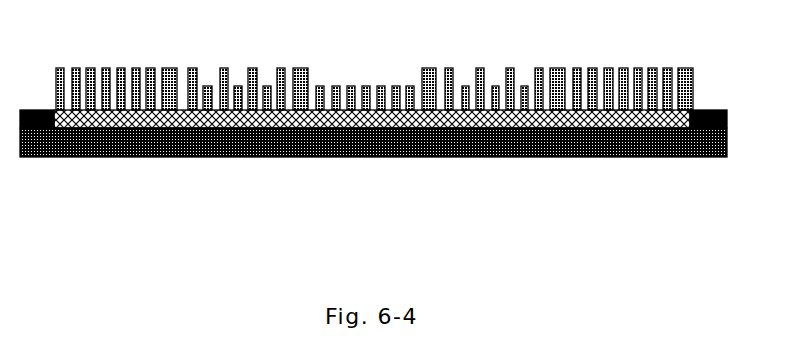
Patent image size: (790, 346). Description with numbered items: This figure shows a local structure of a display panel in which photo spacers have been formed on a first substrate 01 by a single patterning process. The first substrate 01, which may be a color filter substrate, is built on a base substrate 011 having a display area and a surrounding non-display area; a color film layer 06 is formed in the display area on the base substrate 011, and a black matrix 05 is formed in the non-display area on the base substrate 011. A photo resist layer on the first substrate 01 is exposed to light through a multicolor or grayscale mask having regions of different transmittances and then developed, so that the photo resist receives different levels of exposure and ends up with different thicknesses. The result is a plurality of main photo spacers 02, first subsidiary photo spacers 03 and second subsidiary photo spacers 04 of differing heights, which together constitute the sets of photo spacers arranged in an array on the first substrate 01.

The first substrate 01 is at (373, 188).
The base substrate 011 is at (291, 158).
The main photo spacers 02 is at (555, 80).
The first subsidiary photo spacers 03 is at (479, 82).
The second subsidiary photo spacers 04 is at (334, 84).
The black matrix 05 is at (373, 155).
The color film layer 06 is at (114, 127).